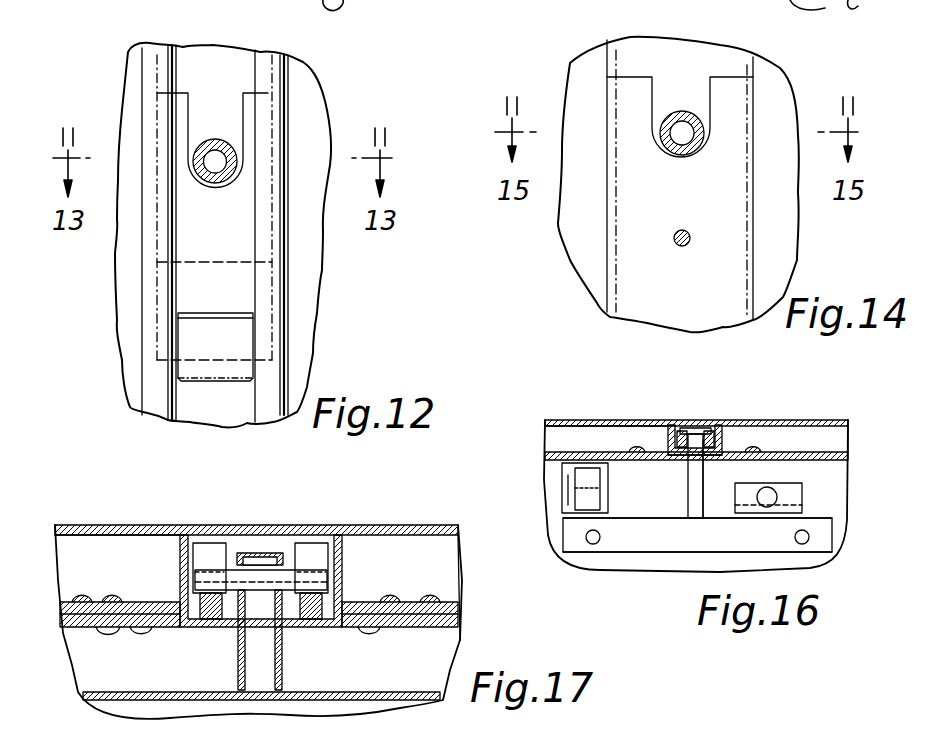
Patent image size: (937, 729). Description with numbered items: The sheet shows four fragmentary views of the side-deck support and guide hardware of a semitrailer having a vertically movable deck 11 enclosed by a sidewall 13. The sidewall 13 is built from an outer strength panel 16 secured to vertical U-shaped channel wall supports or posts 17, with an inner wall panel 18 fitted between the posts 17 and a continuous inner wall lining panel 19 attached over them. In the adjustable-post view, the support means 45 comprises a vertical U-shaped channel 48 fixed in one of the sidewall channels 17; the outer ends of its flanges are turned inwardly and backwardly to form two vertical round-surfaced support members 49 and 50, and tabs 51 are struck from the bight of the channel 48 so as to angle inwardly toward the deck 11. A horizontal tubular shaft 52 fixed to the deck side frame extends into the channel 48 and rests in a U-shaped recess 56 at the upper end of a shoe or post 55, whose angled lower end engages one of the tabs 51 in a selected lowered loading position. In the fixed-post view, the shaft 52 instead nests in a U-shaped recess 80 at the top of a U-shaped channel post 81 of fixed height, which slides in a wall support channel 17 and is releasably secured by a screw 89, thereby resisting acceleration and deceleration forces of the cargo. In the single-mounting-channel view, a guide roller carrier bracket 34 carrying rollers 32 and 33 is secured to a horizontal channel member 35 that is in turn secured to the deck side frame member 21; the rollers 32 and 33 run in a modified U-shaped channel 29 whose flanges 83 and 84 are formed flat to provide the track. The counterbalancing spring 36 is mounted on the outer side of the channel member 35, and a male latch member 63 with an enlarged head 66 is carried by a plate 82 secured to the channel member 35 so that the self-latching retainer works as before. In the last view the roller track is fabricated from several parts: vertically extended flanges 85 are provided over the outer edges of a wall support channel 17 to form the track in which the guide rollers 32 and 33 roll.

In FIG. 16, the vertically movable deck 11 is at (639, 574).
In FIG. 17, the vertically movable deck 11 is at (388, 710).
In FIG. 16, the sidewall 13 is at (825, 432).
In FIG. 17, the sidewall 13 is at (118, 540).
In FIG. 16, the outer strength panel 16 is at (790, 420).
In FIG. 17, the outer strength panel 16 is at (398, 525).
In FIG. 14, the U-shaped channel wall support 17 is at (675, 57).
In FIG. 16, the U-shaped channel wall support 17 is at (725, 437).
In FIG. 17, the U-shaped channel wall support 17 is at (345, 560).
In FIG. 16, the inner wall panel 18 is at (835, 455).
In FIG. 17, the inner wall panel 18 is at (458, 617).
In FIG. 12, the continuous inner wall panel 19 is at (305, 97).
In FIG. 14, the continuous inner wall panel 19 is at (556, 222).
In FIG. 16, the continuous inner wall panel 19 is at (840, 463).
In FIG. 17, the continuous inner wall panel 19 is at (435, 636).
In FIG. 16, the longitudinal side frame member 21 is at (612, 548).
In FIG. 17, the longitudinal side frame member 21 is at (360, 690).
In FIG. 16, the U-shaped channel 29 is at (667, 468).
In FIG. 16, the roller 32 is at (680, 426).
In FIG. 17, the roller 32 is at (215, 545).
In FIG. 16, the roller 33 is at (715, 426).
In FIG. 17, the roller 33 is at (307, 548).
In FIG. 16, the guide roller bracket 34 is at (697, 539).
In FIG. 17, the guide roller bracket 34 is at (240, 655).
In FIG. 16, the horizontal channel member 35 is at (572, 530).
In FIG. 16, the counterbalancing spring 36 is at (563, 497).
In FIG. 12, the support means 45 is at (126, 280).
In FIG. 12, the vertical U-shaped channel 48 is at (270, 32).
In FIG. 12, the support member 49 is at (283, 65).
In FIG. 12, the support member 50 is at (172, 48).
In FIG. 12, the tab 51 is at (238, 345).
In FIG. 12, the horizontal tubular shaft 52 is at (218, 184).
In FIG. 14, the horizontal tubular shaft 52 is at (670, 158).
In FIG. 12, the post 55 is at (190, 115).
In FIG. 12, the U-shaped recess 56 is at (241, 136).
In FIG. 16, the male latch member 63 is at (753, 507).
In FIG. 16, the enlarged head 66 is at (770, 507).
In FIG. 14, the U-shaped recess 80 is at (712, 94).
In FIG. 14, the U-shaped channel post 81 is at (622, 306).
In FIG. 16, the plate 82 is at (795, 498).
In FIG. 16, the flange 83 is at (682, 470).
In FIG. 16, the flange 84 is at (710, 466).
In FIG. 17, the vertically extended flange 85 is at (205, 627).
In FIG. 14, the screw 89 is at (685, 247).